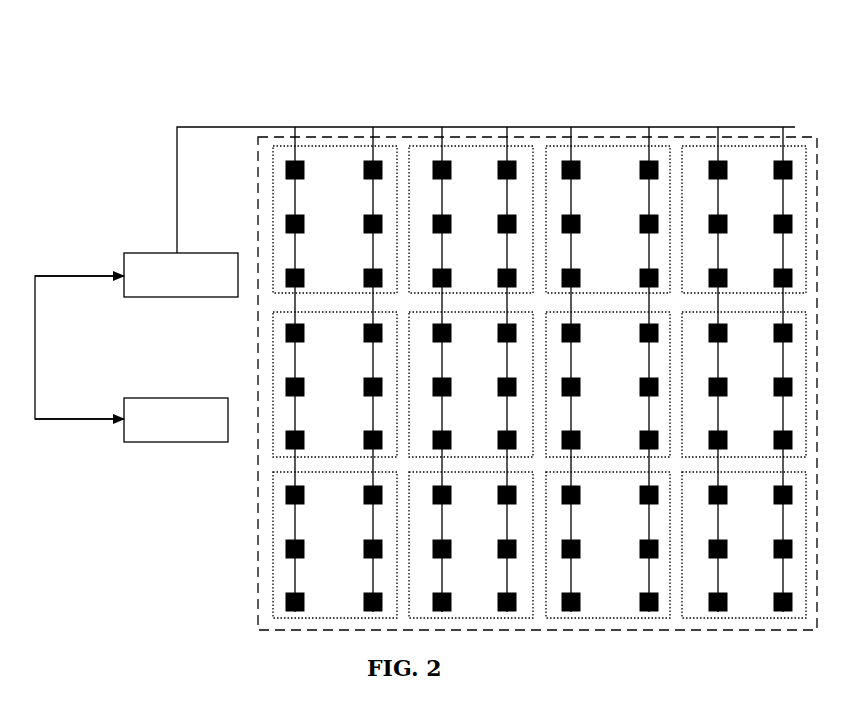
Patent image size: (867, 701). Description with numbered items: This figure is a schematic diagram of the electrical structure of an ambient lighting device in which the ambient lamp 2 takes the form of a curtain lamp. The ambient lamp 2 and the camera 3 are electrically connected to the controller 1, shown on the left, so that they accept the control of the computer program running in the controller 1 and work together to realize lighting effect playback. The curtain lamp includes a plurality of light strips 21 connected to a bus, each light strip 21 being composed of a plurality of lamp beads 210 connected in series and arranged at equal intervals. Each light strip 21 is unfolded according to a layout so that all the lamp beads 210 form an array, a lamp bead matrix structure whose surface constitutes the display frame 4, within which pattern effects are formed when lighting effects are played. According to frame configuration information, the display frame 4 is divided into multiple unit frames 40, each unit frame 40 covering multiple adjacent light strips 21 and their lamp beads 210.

The controller 1 is at (145, 253).
The ambient lamp 2 is at (403, 110).
The camera 3 is at (165, 398).
The display frame 4 is at (543, 137).
The unit frame 40 is at (603, 147).
The light strip 21 is at (295, 565).
The lamp bead 210 is at (290, 497).